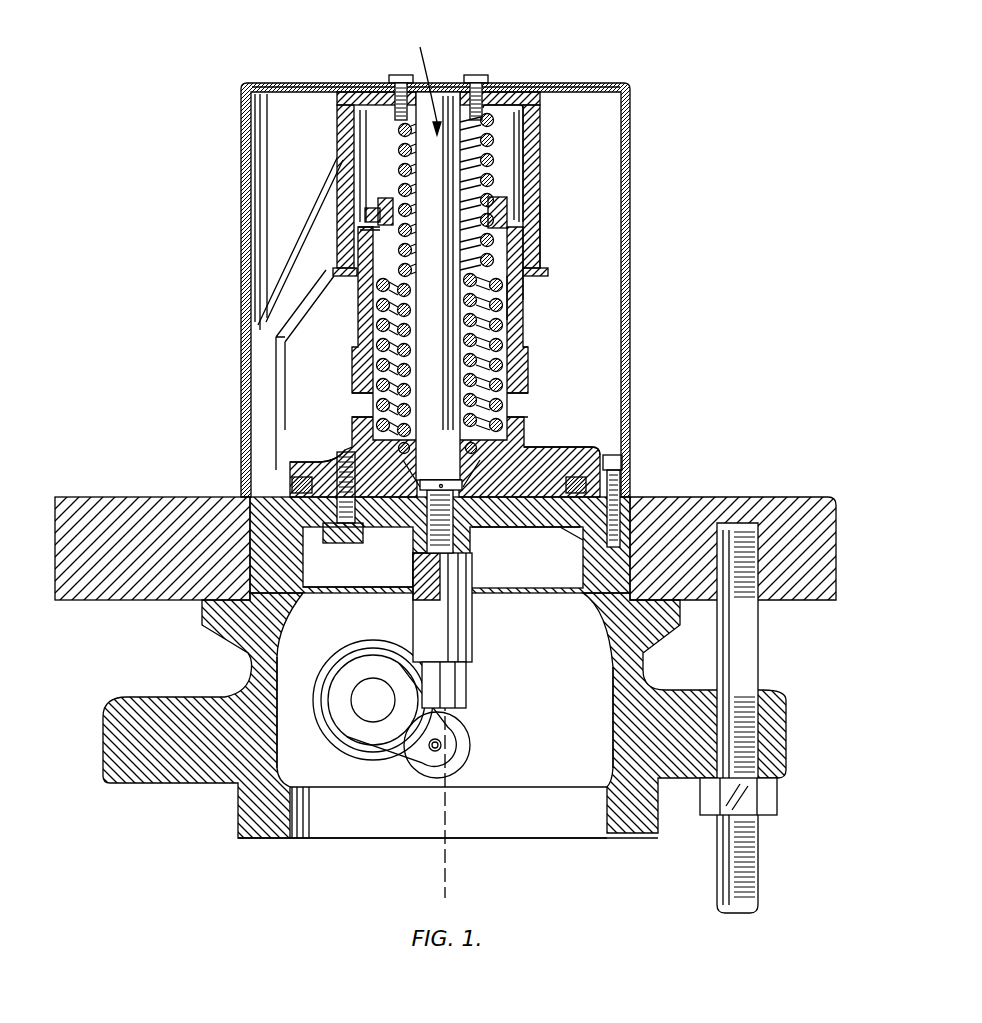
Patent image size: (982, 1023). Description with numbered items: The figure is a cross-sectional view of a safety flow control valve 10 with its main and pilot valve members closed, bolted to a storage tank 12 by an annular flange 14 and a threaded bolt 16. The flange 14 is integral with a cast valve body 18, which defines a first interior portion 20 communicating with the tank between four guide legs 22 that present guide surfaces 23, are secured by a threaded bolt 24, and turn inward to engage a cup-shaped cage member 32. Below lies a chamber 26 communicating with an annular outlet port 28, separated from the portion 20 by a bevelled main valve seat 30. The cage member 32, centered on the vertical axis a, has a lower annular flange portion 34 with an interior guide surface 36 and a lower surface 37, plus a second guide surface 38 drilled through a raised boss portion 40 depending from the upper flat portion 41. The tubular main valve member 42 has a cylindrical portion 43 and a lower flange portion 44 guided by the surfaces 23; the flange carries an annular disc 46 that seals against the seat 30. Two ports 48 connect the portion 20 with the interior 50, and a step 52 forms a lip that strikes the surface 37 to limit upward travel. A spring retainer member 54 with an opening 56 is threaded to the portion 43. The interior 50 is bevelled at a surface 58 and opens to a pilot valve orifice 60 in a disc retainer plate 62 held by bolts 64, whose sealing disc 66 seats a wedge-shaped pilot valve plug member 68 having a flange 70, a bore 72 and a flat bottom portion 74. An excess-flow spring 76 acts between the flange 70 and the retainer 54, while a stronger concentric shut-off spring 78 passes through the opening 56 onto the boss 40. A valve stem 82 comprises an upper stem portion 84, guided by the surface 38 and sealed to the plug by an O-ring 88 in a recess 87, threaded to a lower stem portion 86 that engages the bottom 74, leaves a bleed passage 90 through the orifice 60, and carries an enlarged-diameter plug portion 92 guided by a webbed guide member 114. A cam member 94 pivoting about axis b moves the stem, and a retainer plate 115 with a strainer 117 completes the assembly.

The safety flow control valve 10 is at (676, 832).
The storage tank 12 is at (766, 494).
The annular flange 14 is at (780, 692).
The threaded bolt 16 is at (776, 800).
The valve body 18 is at (240, 683).
The first interior portion 20 is at (308, 381).
The guide legs 22 is at (321, 265).
The guide surfaces 23 is at (300, 428).
The threaded bolt 24 is at (623, 472).
The chamber 26 is at (540, 674).
The annular outlet port 28 is at (545, 823).
The main valve seat 30 is at (596, 528).
The cage member 32 is at (546, 160).
The lower annular flange portion 34 is at (541, 237).
The guide surface 36 is at (536, 284).
The lower surface 37 is at (548, 272).
The second guide surface 38 is at (441, 90).
The raised boss portion 40 is at (486, 116).
The upper flat portion 41 is at (513, 88).
The main valve member 42 is at (553, 440).
The cylindrical portion 43 is at (526, 303).
The flange portion 44 is at (571, 455).
The annular disc 46 is at (292, 470).
The ports 48 is at (356, 408).
The interior 50 is at (500, 316).
The step 52 is at (529, 347).
The spring retainer member 54 is at (384, 208).
The opening 56 is at (493, 200).
The bevelled surface 58 is at (538, 524).
The pilot valve orifice 60 is at (526, 557).
The disc retainer plate 62 is at (567, 540).
The bolts 64 is at (350, 545).
The sealing disc 66 is at (413, 507).
The pilot valve plug member 68 is at (362, 438).
The flange 70 is at (531, 432).
The bore 72 is at (458, 470).
The flat bottom portion 74 is at (509, 476).
The excess-flow spring 76 is at (378, 318).
The shut-off spring 78 is at (398, 152).
The valve stem 82 is at (419, 78).
The upper stem portion 84 is at (454, 158).
The lower stem portion 86 is at (467, 686).
The recess 87 is at (451, 488).
The O-ring 88 is at (440, 545).
The bleed passage 90 is at (415, 535).
The enlarged-diameter plug portion 92 is at (473, 630).
The cam member 94 is at (470, 745).
The guide member 114 is at (373, 588).
The retainer plate 115 is at (576, 82).
The strainer 117 is at (243, 165).
The vertical axis a is at (448, 858).
The pivot axis b is at (372, 700).